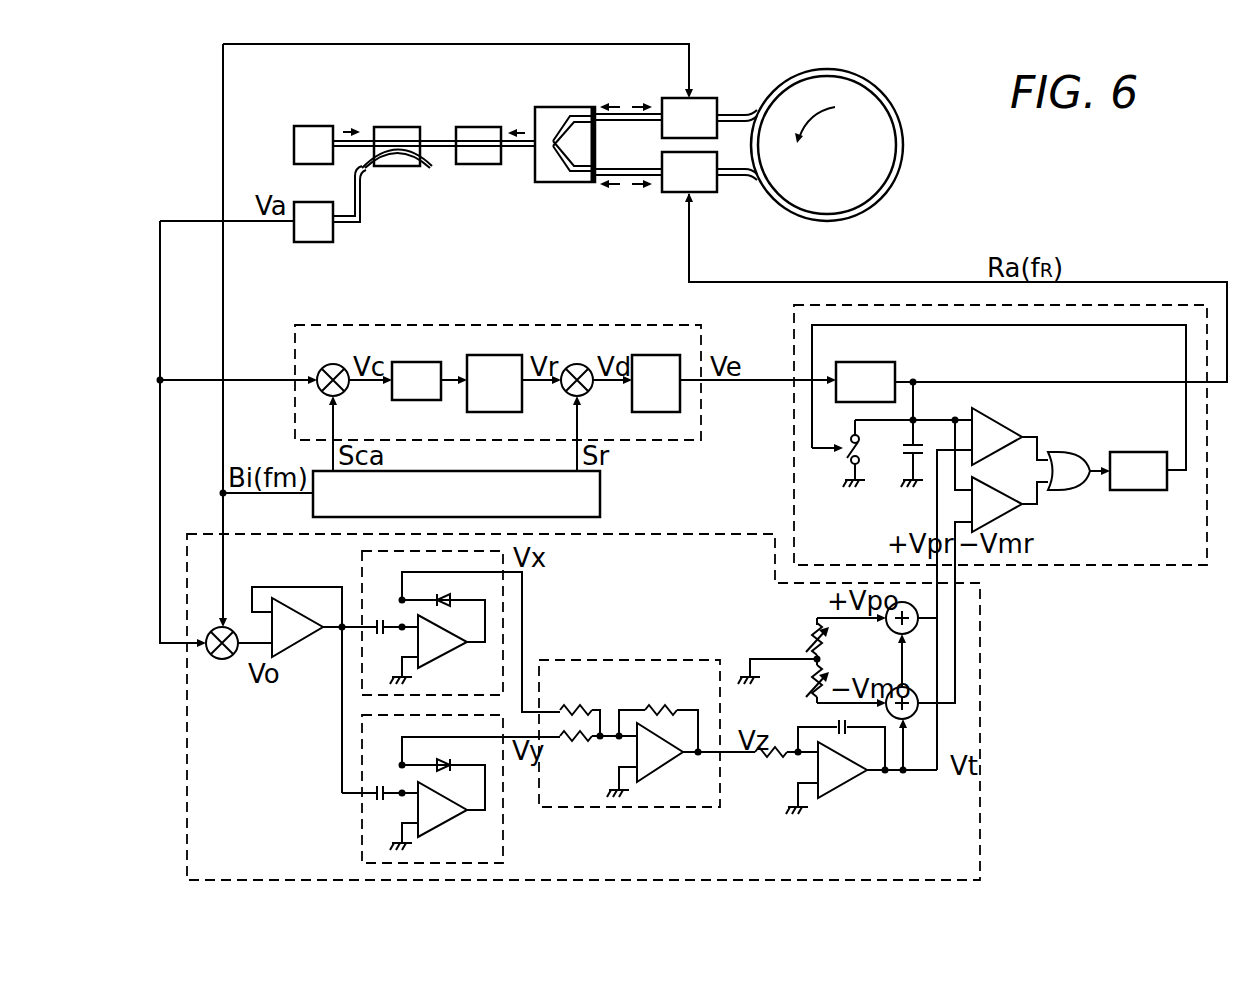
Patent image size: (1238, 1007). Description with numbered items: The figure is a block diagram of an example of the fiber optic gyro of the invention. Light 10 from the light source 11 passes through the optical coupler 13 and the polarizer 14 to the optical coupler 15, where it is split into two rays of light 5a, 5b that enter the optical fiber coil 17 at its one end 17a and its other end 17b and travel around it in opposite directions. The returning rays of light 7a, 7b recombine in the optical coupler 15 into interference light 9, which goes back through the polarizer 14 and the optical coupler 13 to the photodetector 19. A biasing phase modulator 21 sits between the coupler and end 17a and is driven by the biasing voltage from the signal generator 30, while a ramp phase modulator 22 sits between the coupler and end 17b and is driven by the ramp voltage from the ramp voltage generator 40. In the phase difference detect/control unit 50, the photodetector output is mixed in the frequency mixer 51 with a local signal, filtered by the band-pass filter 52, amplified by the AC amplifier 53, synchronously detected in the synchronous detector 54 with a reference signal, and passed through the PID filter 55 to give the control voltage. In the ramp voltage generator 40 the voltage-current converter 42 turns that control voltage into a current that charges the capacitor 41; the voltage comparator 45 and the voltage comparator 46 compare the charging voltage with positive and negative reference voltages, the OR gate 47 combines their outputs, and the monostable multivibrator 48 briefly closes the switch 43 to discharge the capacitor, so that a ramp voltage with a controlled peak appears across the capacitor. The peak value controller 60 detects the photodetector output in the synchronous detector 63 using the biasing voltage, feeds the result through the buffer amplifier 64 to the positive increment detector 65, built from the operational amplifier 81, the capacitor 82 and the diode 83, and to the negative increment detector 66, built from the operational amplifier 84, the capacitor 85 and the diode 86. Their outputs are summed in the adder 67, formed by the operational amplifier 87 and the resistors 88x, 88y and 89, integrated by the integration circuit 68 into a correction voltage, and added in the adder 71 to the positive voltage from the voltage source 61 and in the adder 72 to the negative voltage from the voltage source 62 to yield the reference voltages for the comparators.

The light source 11 is at (306, 126).
The light 10 is at (350, 128).
The optical coupler 13 is at (394, 127).
The polarizer 14 is at (470, 127).
The interference light 9 is at (517, 133).
The optical coupler 15 is at (541, 182).
The light 7b is at (610, 107).
The light 7a is at (610, 184).
The light 5a is at (640, 107).
The light 5b is at (642, 184).
The biasing phase modulator 21 is at (678, 98).
The ramp phase modulator 22 is at (678, 192).
The one end of the optical fiber coil 17a is at (731, 115).
The other end of the optical fiber coil 17b is at (731, 176).
The optical fiber coil 17 is at (796, 216).
The photodetector 19 is at (328, 242).
The phase difference detect/control unit 50 is at (406, 325).
The frequency mixer 51 is at (322, 369).
The band-pass filter 52 is at (392, 400).
The AC amplifier 53 is at (522, 405).
The synchronous detector 54 is at (580, 364).
The PID filter 55 is at (632, 405).
The signal generator 30 is at (600, 492).
The ramp voltage generator 40 is at (1035, 565).
The voltage-current converter 42 is at (893, 372).
The switch 43 is at (848, 462).
The capacitor 41 is at (900, 455).
The voltage comparator 45 is at (1000, 425).
The voltage comparator 46 is at (1005, 515).
The OR gate 47 is at (1062, 452).
The monostable multivibrator 48 is at (1140, 490).
The peak value controller 60 is at (980, 835).
The synchronous detector 63 is at (222, 660).
The buffer amplifier 64 is at (302, 650).
The positive increment detector 65 is at (503, 615).
The negative increment detector 66 is at (362, 835).
The operational amplifier 81 is at (445, 658).
The capacitor 82 is at (380, 640).
The diode 83 is at (430, 598).
The operational amplifier 84 is at (448, 828).
The capacitor 85 is at (382, 784).
The diode 86 is at (452, 770).
The adder 67 is at (572, 660).
The resistor 88x is at (575, 705).
The resistor 88y is at (578, 742).
The resistor 89 is at (665, 705).
The operational amplifier 87 is at (665, 775).
The integration circuit 68 is at (855, 790).
The voltage source 61 is at (810, 636).
The voltage source 62 is at (810, 690).
The adder 71 is at (915, 630).
The adder 72 is at (895, 688).